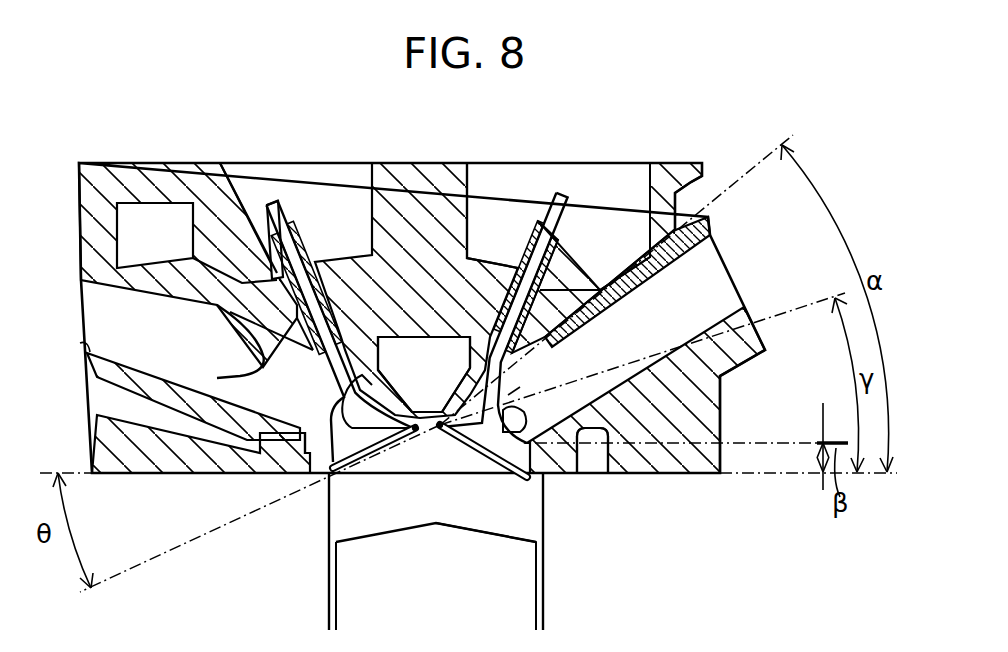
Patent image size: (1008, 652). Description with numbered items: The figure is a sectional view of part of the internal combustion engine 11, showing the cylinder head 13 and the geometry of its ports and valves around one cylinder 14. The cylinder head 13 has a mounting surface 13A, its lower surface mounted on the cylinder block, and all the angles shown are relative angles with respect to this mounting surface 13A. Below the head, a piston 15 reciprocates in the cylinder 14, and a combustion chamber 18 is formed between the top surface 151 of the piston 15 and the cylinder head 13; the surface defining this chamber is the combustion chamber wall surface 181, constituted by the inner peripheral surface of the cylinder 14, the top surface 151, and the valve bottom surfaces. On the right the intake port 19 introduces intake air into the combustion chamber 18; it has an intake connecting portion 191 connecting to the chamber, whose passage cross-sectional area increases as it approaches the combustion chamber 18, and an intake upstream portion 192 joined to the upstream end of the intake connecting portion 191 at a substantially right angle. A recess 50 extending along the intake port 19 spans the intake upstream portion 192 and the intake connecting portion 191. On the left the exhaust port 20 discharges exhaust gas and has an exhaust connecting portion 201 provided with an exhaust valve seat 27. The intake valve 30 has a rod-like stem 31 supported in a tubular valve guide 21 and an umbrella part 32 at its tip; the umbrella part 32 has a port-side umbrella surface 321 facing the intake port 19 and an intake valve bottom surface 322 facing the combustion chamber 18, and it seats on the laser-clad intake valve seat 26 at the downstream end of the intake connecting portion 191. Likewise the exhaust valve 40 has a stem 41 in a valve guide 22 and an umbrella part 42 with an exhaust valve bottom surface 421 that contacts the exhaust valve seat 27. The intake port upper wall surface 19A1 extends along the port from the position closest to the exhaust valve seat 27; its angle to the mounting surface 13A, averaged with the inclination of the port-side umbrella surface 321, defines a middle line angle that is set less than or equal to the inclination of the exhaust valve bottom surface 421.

The internal combustion engine 11 is at (730, 143).
The cylinder head 13 is at (90, 225).
The mounting surface 13A is at (121, 475).
The cylinder 14 is at (329, 508).
The piston 15 is at (336, 590).
The combustion chamber 18 is at (447, 514).
The combustion chamber wall surface 181 is at (533, 525).
The top surface 151 is at (545, 532).
The intake port 19 is at (733, 317).
The intake port upper wall surface 19A1 is at (508, 395).
The intake upstream portion 192 is at (623, 307).
The exhaust port 20 is at (85, 346).
The exhaust connecting portion 201 is at (345, 383).
The valve guide 21 is at (563, 246).
The valve guide 22 is at (293, 228).
The intake valve seat 26 is at (545, 476).
The exhaust valve seat 27 is at (305, 446).
The intake valve 30 is at (562, 192).
The stem 31 is at (555, 208).
The umbrella part 32 is at (462, 395).
The port-side umbrella surface 321 is at (587, 430).
The intake valve bottom surface 322 is at (485, 472).
The exhaust valve 40 is at (268, 200).
The stem 41 is at (312, 247).
The umbrella part 42 is at (333, 440).
The exhaust valve bottom surface 421 is at (380, 470).
The recess 50 is at (526, 413).
The intake connecting portion 191 is at (438, 410).